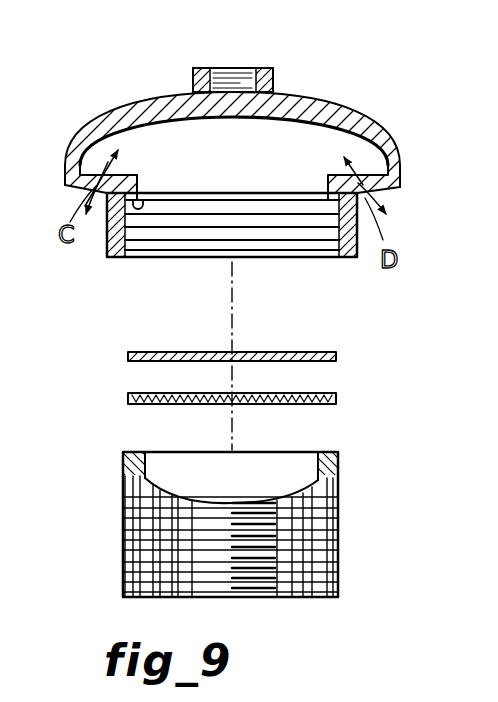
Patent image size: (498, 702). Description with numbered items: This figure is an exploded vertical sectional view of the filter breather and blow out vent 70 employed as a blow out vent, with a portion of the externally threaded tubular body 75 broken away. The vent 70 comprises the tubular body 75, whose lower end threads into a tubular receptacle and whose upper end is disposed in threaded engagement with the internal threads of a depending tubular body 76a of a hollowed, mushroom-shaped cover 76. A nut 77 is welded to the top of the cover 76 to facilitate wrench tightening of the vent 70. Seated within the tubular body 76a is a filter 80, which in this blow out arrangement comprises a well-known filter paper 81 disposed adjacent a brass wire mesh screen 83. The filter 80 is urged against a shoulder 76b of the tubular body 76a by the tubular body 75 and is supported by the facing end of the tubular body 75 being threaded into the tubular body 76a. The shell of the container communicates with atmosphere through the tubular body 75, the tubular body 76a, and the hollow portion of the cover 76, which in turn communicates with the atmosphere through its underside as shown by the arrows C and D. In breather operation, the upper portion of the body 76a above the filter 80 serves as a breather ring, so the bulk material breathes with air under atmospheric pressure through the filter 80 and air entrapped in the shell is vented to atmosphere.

The filter breather and blow out vent 70 is at (62, 116).
The externally threaded tubular body 75 is at (122, 520).
The hollowed mushroom-shaped cover 76 is at (372, 112).
The depending tubular body of cover 76a is at (107, 236).
The shoulder of tubular body 76b is at (142, 201).
The nut 77 is at (197, 80).
The filter 80 is at (120, 338).
The filter paper 81 is at (292, 352).
The wire mesh screen 83 is at (324, 394).